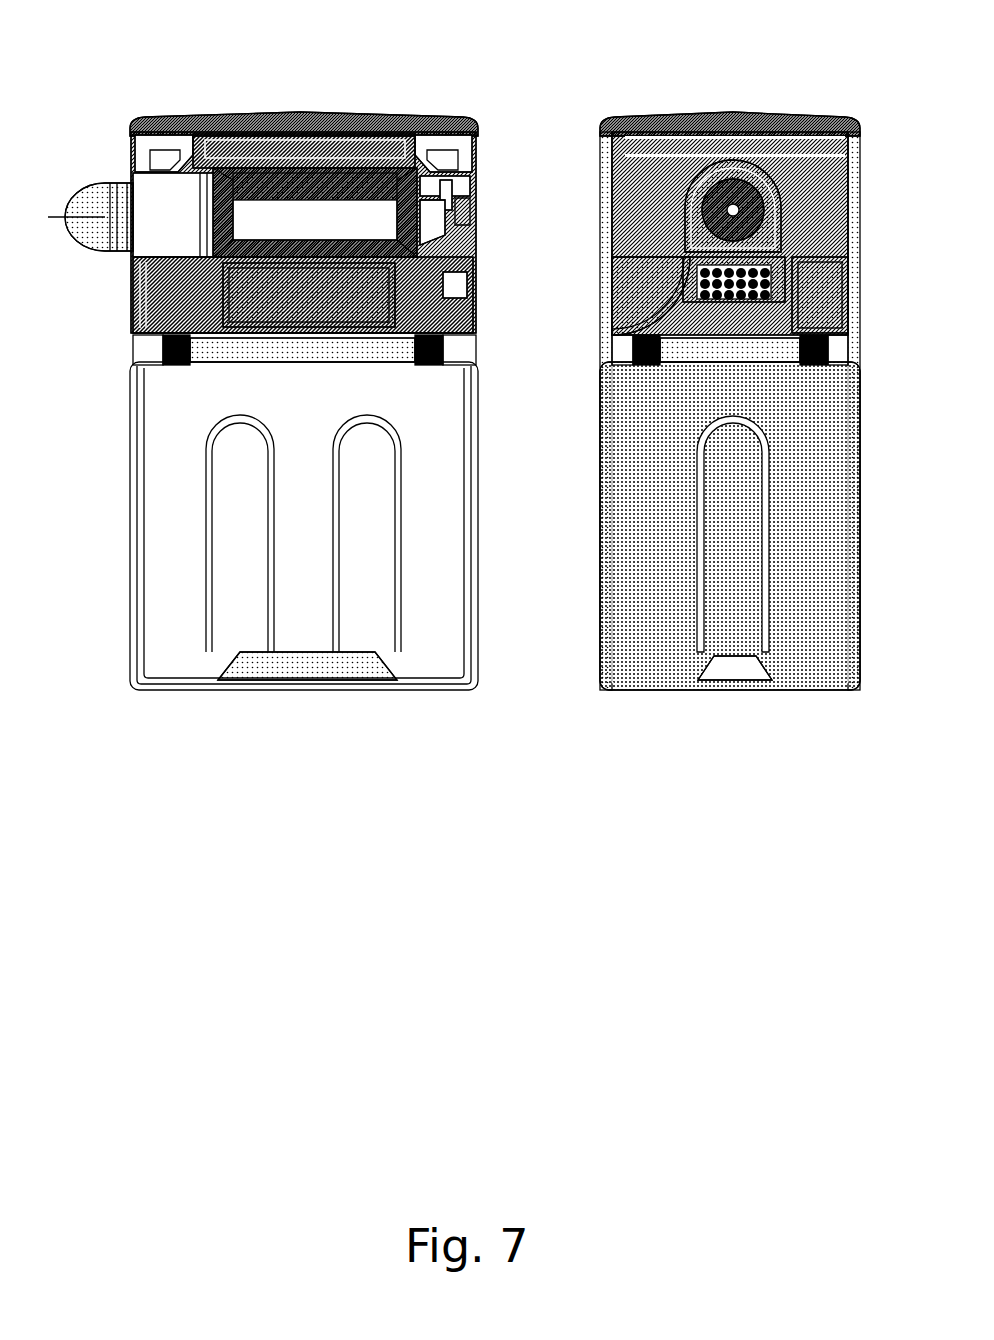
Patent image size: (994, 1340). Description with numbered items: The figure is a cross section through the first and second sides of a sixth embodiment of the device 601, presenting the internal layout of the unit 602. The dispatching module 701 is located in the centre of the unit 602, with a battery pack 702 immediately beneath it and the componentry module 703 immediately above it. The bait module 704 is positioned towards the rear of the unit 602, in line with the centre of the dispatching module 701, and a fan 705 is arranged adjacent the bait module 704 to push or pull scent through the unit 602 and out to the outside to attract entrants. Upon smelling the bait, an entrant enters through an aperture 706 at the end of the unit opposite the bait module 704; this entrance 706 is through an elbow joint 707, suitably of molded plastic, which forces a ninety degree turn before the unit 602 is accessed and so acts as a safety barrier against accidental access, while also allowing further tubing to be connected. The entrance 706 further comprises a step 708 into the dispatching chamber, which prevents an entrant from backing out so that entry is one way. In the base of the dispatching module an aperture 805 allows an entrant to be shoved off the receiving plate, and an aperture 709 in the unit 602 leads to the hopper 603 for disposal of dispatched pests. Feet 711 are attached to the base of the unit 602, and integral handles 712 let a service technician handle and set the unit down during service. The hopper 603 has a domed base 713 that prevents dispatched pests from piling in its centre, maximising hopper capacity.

The device 601 is at (413, 73).
The unit 602 is at (190, 135).
The hopper 603 is at (602, 628).
The dispatching module 701 is at (284, 167).
The battery pack 702 is at (460, 280).
The componentry module 703 is at (345, 143).
The bait module 704 is at (445, 211).
The fan 705 is at (473, 207).
The aperture 706 is at (170, 208).
The elbow joint 707 is at (65, 243).
The step 708 is at (157, 250).
The aperture 709 is at (825, 302).
The feet 711 is at (168, 367).
The integral handles 712 is at (178, 143).
The domed base 713 is at (333, 640).
The aperture 805 is at (350, 298).